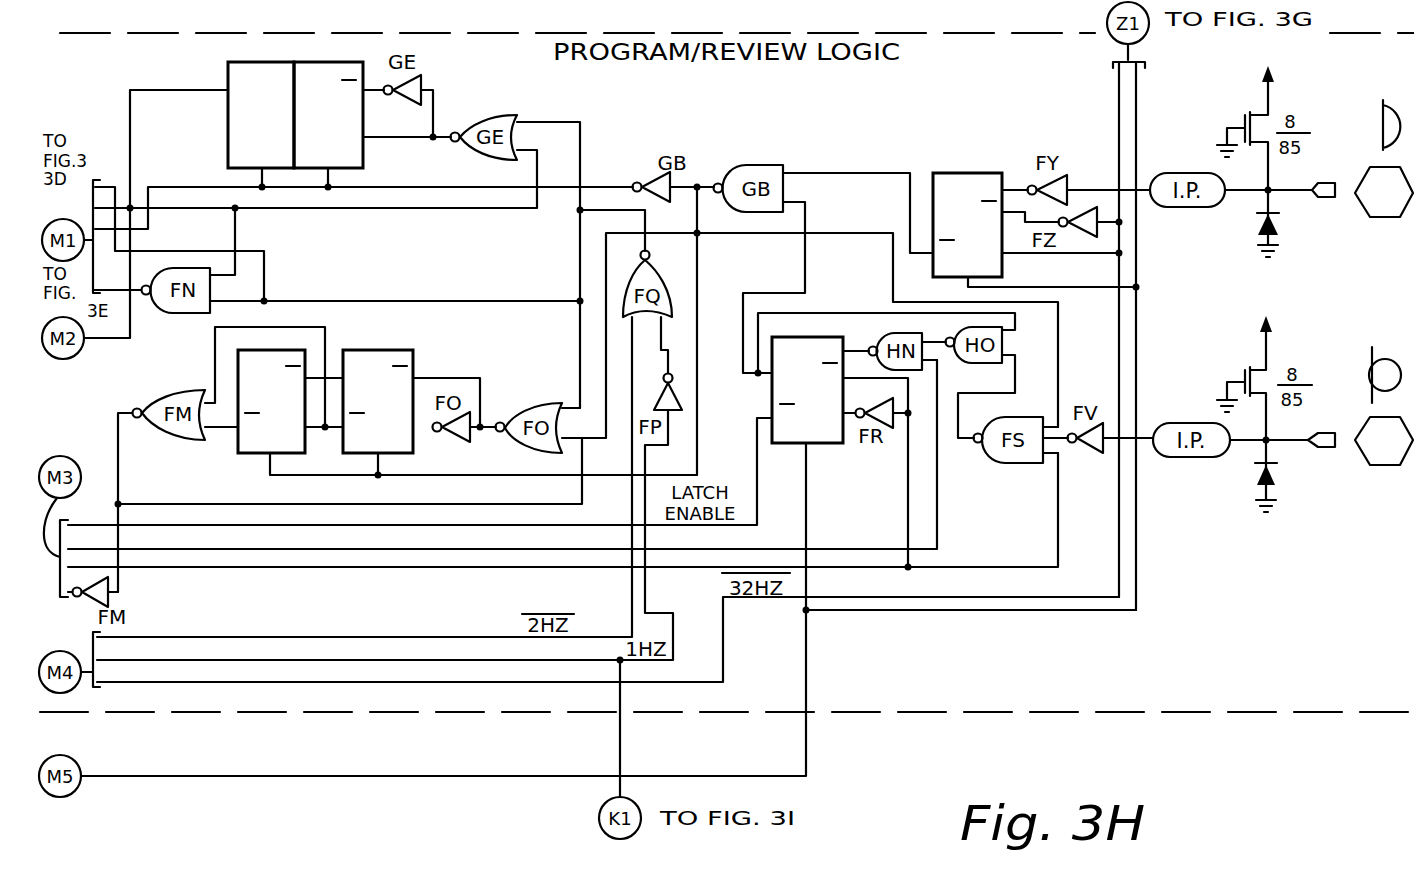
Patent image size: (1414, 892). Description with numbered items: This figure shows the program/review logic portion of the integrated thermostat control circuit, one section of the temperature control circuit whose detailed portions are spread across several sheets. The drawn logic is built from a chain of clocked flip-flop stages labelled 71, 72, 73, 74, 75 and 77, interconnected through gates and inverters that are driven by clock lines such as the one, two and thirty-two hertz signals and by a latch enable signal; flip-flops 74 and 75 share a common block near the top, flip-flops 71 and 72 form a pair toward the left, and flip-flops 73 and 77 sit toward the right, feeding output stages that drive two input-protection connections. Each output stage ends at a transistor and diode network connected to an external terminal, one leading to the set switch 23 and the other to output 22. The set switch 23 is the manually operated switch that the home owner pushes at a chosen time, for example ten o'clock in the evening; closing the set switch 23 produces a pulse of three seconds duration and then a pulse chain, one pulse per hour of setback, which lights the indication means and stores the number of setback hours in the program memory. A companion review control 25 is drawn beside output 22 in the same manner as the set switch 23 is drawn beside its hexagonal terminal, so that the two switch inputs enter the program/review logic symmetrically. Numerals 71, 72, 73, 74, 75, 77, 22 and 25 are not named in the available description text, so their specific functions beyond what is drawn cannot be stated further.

The flip-flop 71 is at (271, 402).
The flip-flop 72 is at (378, 402).
The flip-flop 73 is at (807, 391).
The flip-flop 74 is at (261, 115).
The flip-flop 75 is at (328, 115).
The flip-flop 77 is at (967, 226).
The set switch 23 is at (1397, 102).
The review switch output 25 is at (1386, 360).
The output terminal 22 is at (1384, 441).